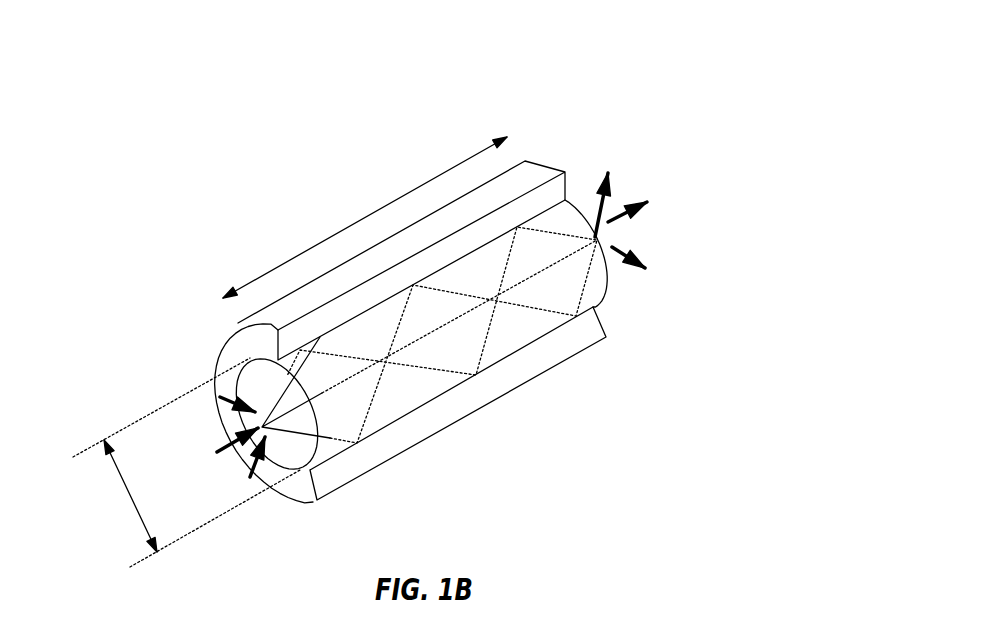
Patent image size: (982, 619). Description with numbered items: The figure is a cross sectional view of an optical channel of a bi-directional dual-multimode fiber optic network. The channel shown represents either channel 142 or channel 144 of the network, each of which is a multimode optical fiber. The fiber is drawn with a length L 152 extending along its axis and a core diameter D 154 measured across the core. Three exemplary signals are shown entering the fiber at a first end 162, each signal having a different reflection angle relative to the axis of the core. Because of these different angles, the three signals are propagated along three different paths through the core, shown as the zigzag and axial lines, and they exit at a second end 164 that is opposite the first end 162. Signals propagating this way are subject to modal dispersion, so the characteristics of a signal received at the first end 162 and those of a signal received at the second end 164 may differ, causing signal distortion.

The channel 142 is at (475, 268).
The channel 144 is at (475, 282).
The length L 152 is at (368, 215).
The core diameter D 154 is at (118, 470).
The first end 162 is at (203, 337).
The second end 164 is at (612, 300).